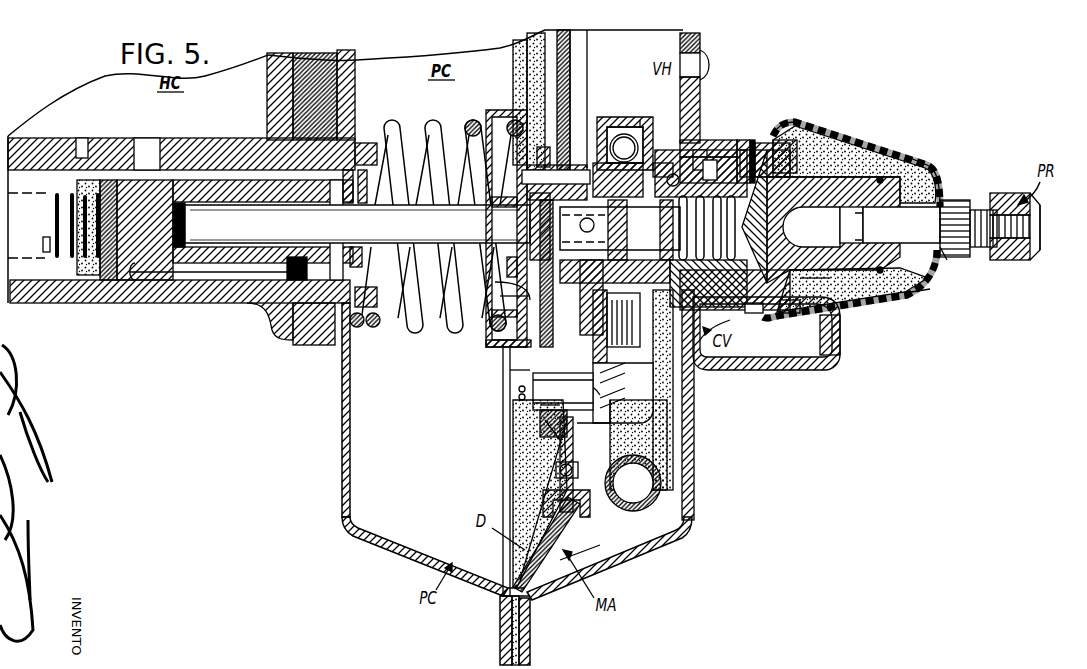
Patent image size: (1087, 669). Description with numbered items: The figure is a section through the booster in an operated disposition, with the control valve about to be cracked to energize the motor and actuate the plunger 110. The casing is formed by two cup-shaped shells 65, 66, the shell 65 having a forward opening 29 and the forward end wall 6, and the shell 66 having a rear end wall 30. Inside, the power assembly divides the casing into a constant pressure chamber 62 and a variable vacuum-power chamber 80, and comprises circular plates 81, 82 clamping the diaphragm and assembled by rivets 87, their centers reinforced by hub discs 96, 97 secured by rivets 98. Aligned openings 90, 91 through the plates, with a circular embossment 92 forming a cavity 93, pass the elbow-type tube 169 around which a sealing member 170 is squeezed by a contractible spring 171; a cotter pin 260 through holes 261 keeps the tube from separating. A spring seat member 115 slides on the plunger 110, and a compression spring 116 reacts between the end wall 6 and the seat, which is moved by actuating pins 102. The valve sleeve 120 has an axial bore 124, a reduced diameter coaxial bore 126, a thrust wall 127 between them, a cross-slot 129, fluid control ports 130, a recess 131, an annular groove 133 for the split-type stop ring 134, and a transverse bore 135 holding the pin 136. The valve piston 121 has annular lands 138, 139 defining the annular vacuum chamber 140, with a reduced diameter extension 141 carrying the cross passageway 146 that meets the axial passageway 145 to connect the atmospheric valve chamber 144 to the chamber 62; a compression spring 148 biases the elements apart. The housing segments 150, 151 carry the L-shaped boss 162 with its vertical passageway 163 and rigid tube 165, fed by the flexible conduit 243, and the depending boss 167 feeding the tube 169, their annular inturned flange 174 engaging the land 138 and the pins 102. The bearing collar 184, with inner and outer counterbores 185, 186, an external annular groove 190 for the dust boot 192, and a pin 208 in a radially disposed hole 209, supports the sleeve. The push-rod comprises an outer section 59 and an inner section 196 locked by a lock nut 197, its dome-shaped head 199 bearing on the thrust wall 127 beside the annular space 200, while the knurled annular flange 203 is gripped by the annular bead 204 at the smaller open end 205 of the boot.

The forward end wall 6 is at (342, 445).
The forward opening 29 is at (355, 145).
The rear end wall 30 is at (700, 36).
The outer section 59 is at (1028, 250).
The constant pressure chamber 62 is at (660, 560).
The cup-shaped shell 65 is at (398, 565).
The cup-shaped shell 66 is at (650, 550).
The variable vacuum-power chamber 80 is at (352, 530).
The circular plate 81 is at (560, 46).
The circular plate 82 is at (572, 42).
The rivets 87 is at (558, 450).
The opening 90 is at (535, 374).
The opening 91 is at (592, 392).
The circular embossment 92 is at (545, 418).
The circular cavity 93 is at (550, 425).
The hub disc 96 is at (535, 296).
The hub disc 97 is at (540, 320).
The rivets 98 is at (530, 288).
The actuating pins 102 is at (545, 192).
The plunger 110 is at (385, 233).
The spring seat member 115 is at (487, 110).
The compression spring 116 is at (441, 138).
The valve sleeve 120 is at (857, 282).
The valve piston 121 is at (655, 233).
The axial bore 124 is at (624, 148).
The reduced diameter coaxial bore 126 is at (917, 298).
The thrust wall 127 is at (790, 205).
The cross-slot 129 is at (673, 174).
The fluid control ports 130 is at (745, 305).
The recess 131 is at (742, 142).
The annular groove 133 is at (930, 163).
The split-type stop ring 134 is at (922, 158).
The transverse bore 135 is at (862, 172).
The pin 136 is at (854, 164).
The annular land 138 is at (600, 290).
The annular land 139 is at (703, 142).
The annular vacuum chamber 140 is at (624, 320).
The reduced diameter extension 141 is at (624, 323).
The atmospheric valve chamber 144 is at (790, 143).
The axial passageway 145 is at (505, 262).
The cross passageway 146 is at (600, 222).
The compression spring 148 is at (788, 124).
The upper segment 150 is at (665, 163).
The lower segment 151 is at (718, 305).
The L-shaped boss 162 is at (613, 118).
The vertical passageway 163 is at (645, 120).
The rigid tube 165 is at (648, 120).
The depending boss 167 is at (694, 375).
The elbow-type tube 169 is at (634, 389).
The sealing member 170 is at (556, 468).
The contractible spring 171 is at (480, 384).
The annular inturned flange 174 is at (545, 358).
The bearing collar 184 is at (830, 143).
The inner counterbore 185 is at (801, 300).
The outer counterbore 186 is at (811, 284).
The external annular groove 190 is at (822, 330).
The dust boot 192 is at (925, 292).
The inner section 196 is at (1030, 228).
The lock nut 197 is at (1003, 262).
The dome-shaped head 199 is at (824, 227).
The annular space 200 is at (852, 290).
The knurled annular flange 203 is at (952, 200).
The annular bead 204 is at (942, 255).
The smaller open end 205 is at (901, 225).
The pin 208 is at (752, 140).
The radially disposed hole 209 is at (762, 143).
The flexible conduit 243 is at (636, 512).
The cotter pin 260 is at (522, 400).
The holes 261 is at (515, 392).